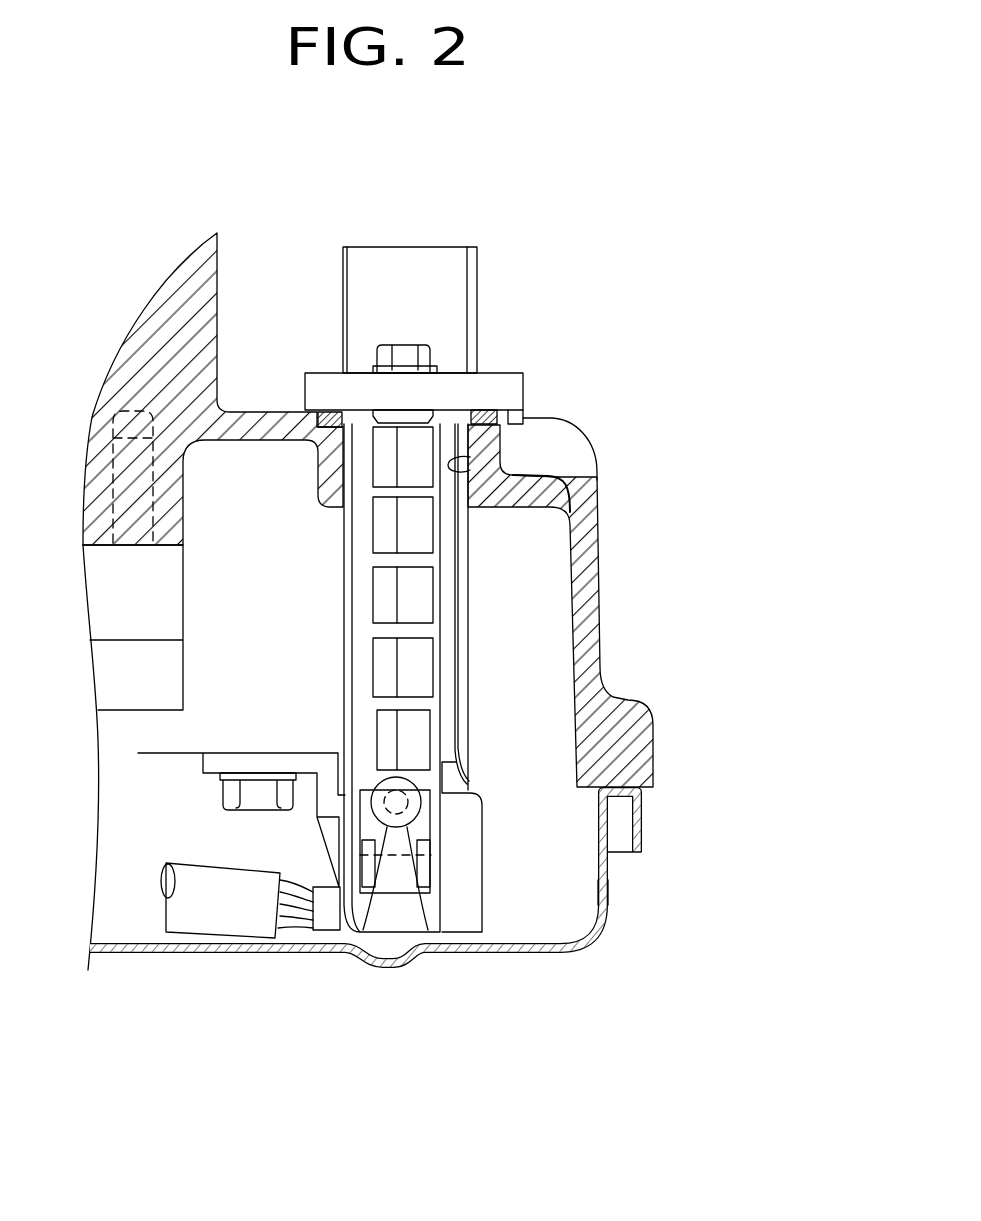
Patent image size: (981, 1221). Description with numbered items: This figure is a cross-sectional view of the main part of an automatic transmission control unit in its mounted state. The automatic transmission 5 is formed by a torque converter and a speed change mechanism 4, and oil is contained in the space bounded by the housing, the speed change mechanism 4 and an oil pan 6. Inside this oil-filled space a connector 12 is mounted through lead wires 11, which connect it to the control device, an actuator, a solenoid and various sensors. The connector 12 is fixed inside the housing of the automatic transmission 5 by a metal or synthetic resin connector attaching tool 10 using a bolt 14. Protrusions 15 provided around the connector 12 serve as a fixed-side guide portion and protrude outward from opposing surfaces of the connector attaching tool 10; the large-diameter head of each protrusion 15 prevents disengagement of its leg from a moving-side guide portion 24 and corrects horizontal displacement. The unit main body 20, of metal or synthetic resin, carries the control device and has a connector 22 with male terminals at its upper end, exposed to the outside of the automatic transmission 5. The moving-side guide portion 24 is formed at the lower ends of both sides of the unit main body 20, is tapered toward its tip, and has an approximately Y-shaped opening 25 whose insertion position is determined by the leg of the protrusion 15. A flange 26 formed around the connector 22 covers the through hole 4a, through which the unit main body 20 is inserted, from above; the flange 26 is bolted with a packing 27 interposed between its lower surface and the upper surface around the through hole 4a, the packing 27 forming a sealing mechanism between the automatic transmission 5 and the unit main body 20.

The speed change mechanism 4 is at (620, 614).
The through hole 4a is at (470, 457).
The automatic transmission 5 is at (632, 477).
The oil pan 6 is at (628, 886).
The connector attaching tool 10 is at (467, 940).
The lead wires 11 is at (215, 916).
The connector 12 is at (418, 832).
The bolt 14 is at (225, 793).
The protrusion 15 is at (417, 812).
The unit main body 20 is at (493, 586).
The connector 22 is at (460, 283).
The moving-side guide portion 24 is at (427, 945).
The opening 25 is at (397, 913).
The flange 26 is at (308, 393).
The packing 27 is at (497, 414).